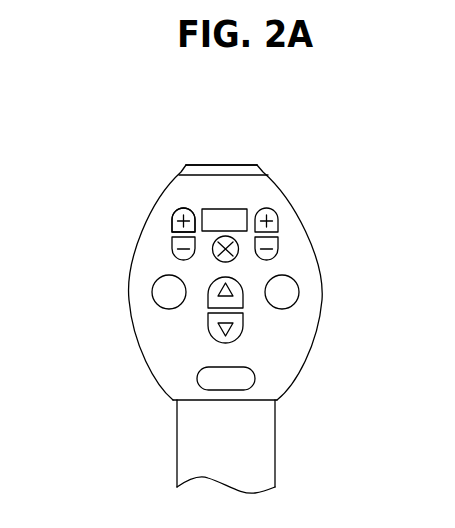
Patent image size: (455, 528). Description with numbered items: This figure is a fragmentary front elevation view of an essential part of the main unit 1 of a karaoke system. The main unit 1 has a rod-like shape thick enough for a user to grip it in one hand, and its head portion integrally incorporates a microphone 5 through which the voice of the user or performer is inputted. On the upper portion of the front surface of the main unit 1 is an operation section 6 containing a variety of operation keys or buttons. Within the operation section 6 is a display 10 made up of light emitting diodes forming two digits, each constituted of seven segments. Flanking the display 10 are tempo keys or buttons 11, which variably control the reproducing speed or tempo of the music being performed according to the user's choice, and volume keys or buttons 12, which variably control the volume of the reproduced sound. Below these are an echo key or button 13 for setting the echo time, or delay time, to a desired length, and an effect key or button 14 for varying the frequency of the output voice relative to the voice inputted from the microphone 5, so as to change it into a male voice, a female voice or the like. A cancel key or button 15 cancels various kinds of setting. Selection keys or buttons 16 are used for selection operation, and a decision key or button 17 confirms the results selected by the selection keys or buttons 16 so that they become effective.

The main unit 1 is at (125, 362).
The microphone 5 is at (215, 170).
The operation section 6 is at (170, 208).
The display 10 is at (233, 212).
The tempo keys or buttons 11 is at (172, 223).
The volume keys or buttons 12 is at (276, 241).
The echo key or button 13 is at (152, 293).
The effect key or button 14 is at (292, 290).
The cancel key or button 15 is at (216, 258).
The selection keys or buttons 16 is at (238, 300).
The decision key or button 17 is at (199, 380).